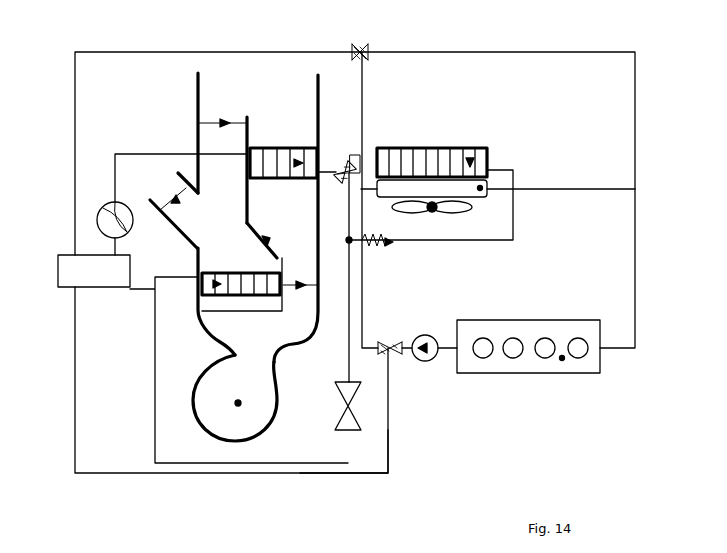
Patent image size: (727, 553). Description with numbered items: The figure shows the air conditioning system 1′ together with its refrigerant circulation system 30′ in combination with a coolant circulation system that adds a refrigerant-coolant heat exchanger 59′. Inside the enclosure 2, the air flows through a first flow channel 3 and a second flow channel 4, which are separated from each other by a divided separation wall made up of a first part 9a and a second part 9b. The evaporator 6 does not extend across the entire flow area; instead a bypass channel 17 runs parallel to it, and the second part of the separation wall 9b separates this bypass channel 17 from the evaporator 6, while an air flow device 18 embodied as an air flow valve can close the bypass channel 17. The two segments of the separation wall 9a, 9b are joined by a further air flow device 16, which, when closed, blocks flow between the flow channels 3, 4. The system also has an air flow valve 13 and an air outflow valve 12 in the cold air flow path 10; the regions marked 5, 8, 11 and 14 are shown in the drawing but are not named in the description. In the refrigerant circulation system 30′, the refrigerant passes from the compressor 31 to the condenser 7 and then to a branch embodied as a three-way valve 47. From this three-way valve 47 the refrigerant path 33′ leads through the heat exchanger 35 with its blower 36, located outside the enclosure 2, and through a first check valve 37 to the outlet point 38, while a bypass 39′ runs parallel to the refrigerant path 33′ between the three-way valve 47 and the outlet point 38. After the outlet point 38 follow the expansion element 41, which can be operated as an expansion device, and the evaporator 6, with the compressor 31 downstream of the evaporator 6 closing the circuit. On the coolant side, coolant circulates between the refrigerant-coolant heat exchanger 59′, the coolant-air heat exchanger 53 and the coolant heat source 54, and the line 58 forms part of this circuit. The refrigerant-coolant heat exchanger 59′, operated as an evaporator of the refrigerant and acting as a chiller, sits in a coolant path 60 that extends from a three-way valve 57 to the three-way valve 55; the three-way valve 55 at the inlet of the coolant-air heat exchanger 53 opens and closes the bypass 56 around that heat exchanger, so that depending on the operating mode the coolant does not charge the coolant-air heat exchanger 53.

The air conditioning system 1′ is at (650, 128).
The enclosure 2 is at (193, 88).
The first flow channel 3 is at (190, 147).
The second flow channel 4 is at (321, 115).
The blower 5 is at (238, 403).
The evaporator 6 is at (197, 306).
The condenser 7 is at (318, 148).
The fresh air chamber 8 is at (256, 91).
The first part of the separation wall 9a is at (216, 217).
The second part of the separation wall 9b is at (275, 312).
The cold air flow path 10 is at (168, 183).
The air chamber 11 is at (230, 183).
The air outflow valve 12 is at (150, 200).
The air flow valve 13 is at (192, 123).
The heat exchanger 14 is at (290, 135).
The air flow device 16 is at (262, 238).
The bypass channel 17 is at (308, 270).
The air flow device 18 is at (303, 290).
The refrigerant circulation system 30′ is at (140, 391).
The compressor 31 is at (97, 224).
The refrigerant path 33′ is at (515, 178).
The heat exchanger 35 is at (468, 152).
The blower 36 is at (432, 210).
The first check valve 37 is at (393, 246).
The outlet point 38 is at (377, 248).
The bypass 39′ is at (332, 222).
The expansion element 41 is at (350, 405).
The three-way valve 47 is at (344, 181).
The coolant-air heat exchanger 53 is at (482, 193).
The coolant heat source 54 is at (562, 358).
The three-way valve 55 is at (366, 48).
The bypass 56 is at (534, 55).
The three-way valve 57 is at (392, 355).
The coolant line 58 is at (362, 314).
The refrigerant-coolant heat exchanger 59′ is at (76, 264).
The coolant path 60 is at (390, 466).